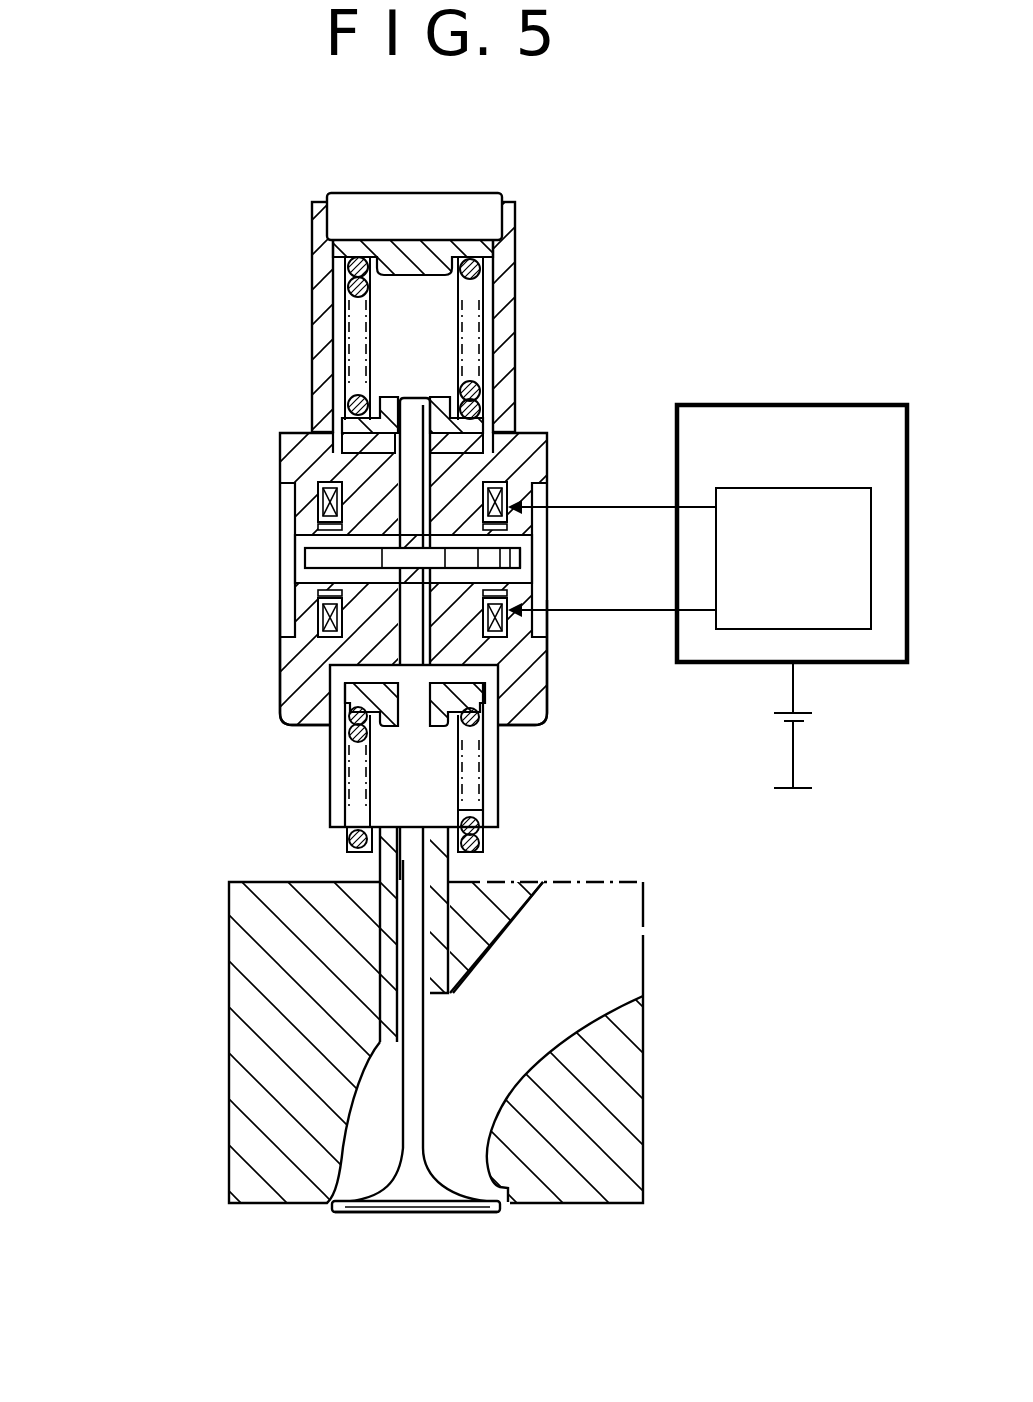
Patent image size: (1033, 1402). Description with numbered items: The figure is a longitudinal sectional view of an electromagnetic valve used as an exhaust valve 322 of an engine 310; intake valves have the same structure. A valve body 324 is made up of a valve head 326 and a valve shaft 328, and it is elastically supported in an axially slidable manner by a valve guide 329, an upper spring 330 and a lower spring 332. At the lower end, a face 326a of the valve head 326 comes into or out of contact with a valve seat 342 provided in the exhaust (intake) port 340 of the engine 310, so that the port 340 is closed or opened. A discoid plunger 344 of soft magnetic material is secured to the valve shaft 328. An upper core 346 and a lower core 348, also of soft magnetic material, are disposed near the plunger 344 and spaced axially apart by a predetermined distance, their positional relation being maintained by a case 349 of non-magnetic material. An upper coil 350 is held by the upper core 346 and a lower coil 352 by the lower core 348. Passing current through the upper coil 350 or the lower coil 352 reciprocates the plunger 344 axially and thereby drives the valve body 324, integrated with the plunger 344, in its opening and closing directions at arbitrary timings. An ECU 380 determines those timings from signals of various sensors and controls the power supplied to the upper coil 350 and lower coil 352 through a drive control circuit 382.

The engine 310 is at (701, 1025).
The exhaust valve 322 is at (551, 282).
The valve body 324 is at (324, 836).
The valve head 326 is at (400, 1193).
The face 326a is at (508, 1205).
The valve shaft 328 is at (410, 1088).
The valve guide 329 is at (448, 868).
The upper spring 330 is at (352, 295).
The lower spring 332 is at (350, 738).
The exhaust (intake) port 340 is at (590, 947).
The valve seat 342 is at (497, 1184).
The plunger 344 is at (308, 560).
The upper core 346 is at (292, 452).
The lower core 348 is at (292, 665).
The case 349 is at (537, 563).
The upper coil 350 is at (317, 512).
The lower coil 352 is at (320, 620).
The ECU 380 is at (855, 403).
The drive control circuit 382 is at (851, 630).